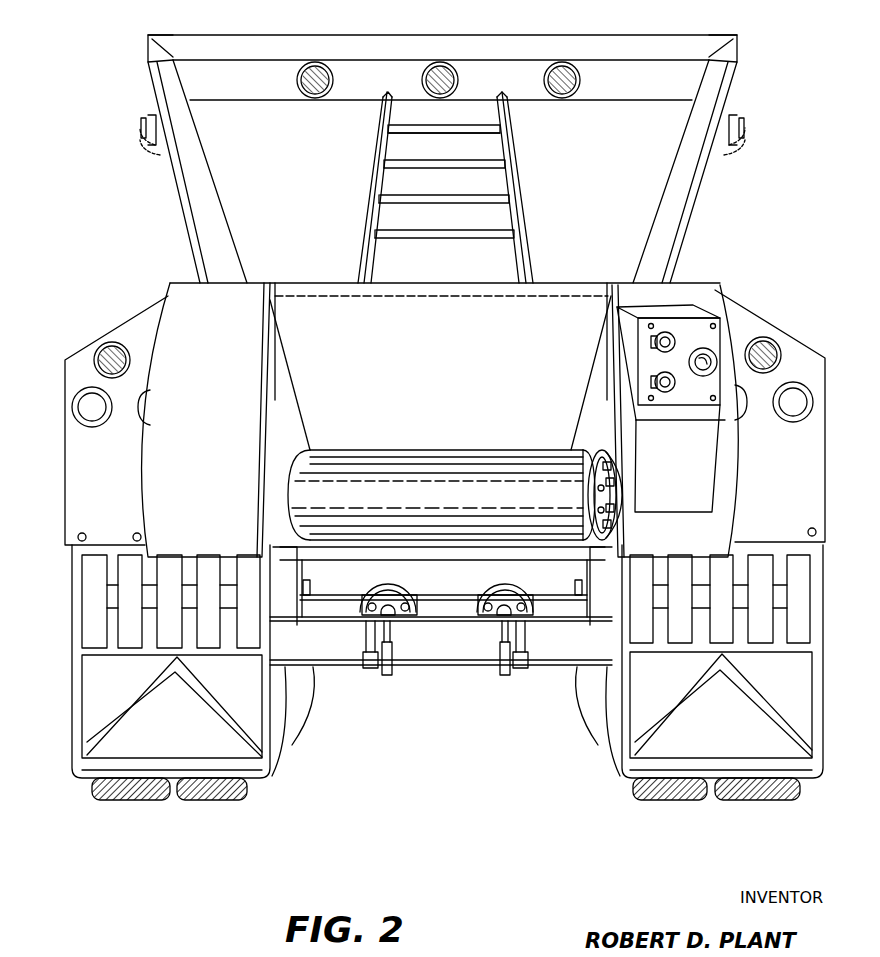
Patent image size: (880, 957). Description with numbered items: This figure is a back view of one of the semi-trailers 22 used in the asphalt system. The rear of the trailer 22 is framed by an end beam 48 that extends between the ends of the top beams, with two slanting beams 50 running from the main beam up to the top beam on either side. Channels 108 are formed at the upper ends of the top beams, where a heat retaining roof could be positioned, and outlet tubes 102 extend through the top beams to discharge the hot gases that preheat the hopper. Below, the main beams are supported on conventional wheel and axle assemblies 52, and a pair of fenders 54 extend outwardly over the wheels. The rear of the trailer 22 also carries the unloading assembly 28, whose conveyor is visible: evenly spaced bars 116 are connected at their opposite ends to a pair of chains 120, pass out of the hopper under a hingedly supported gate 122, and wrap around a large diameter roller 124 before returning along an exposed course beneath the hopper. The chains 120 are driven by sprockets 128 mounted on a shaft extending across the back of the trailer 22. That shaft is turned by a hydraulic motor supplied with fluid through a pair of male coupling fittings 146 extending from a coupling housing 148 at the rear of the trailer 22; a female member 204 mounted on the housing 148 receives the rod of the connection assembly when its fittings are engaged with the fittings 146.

The trailer 22 is at (152, 219).
The unloading assembly 28 is at (238, 394).
The end beam 48 is at (277, 85).
The slanting beam 50 is at (205, 190).
The wheel and axle assembly 52 is at (320, 726).
The fender 54 is at (85, 463).
The outlet tube 102 is at (140, 127).
The channel 108 is at (138, 54).
The bar 116 is at (372, 460).
The chain 120 is at (582, 452).
The gate 122 is at (300, 348).
The roller 124 is at (424, 503).
The sprocket 128 is at (592, 489).
The male coupling fitting 146 is at (655, 372).
The coupling housing 148 is at (700, 415).
The female member 204 is at (708, 360).